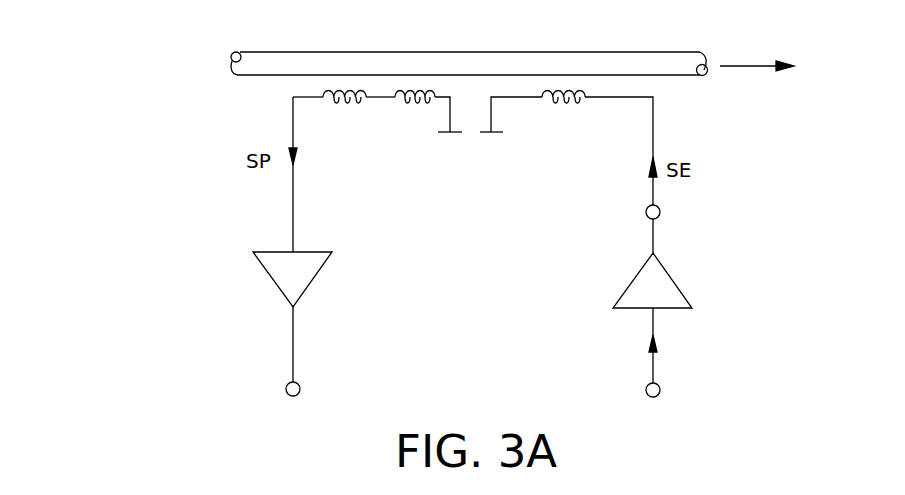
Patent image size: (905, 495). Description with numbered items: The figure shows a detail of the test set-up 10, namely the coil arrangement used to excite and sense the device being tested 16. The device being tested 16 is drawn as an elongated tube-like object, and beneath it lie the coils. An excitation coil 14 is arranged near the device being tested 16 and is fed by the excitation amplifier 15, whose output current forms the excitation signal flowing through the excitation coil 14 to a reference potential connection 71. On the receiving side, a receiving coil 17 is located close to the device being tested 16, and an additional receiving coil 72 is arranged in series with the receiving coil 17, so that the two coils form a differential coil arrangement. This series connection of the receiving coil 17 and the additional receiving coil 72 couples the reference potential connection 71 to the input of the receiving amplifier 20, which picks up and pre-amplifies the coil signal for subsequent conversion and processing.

The test set-up 10 is at (130, 72).
The excitation coil 14 is at (561, 102).
The excitation amplifier 15 is at (672, 280).
The device being tested 16 is at (230, 60).
The receiving coil 17 is at (358, 100).
The receiving amplifier 20 is at (312, 251).
The reference potential connection 71 is at (486, 136).
The additional receiving coil 72 is at (419, 103).